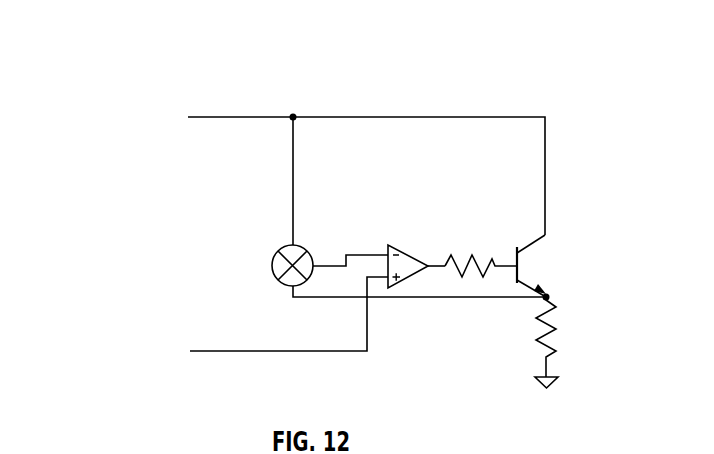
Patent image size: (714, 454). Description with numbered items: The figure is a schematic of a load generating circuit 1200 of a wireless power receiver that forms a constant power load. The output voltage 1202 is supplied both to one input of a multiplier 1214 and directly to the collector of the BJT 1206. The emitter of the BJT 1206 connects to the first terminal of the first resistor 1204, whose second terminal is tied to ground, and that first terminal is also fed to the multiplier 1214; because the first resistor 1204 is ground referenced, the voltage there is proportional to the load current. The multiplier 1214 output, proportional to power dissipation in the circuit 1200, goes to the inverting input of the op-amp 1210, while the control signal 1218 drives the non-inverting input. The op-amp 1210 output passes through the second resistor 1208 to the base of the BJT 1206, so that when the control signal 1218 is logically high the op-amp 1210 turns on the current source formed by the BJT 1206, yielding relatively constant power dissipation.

The load generating circuit 1200 is at (118, 74).
The voltage Vout 1202 is at (156, 103).
The resistor R1 1204 is at (568, 317).
The BJT Q1 1206 is at (555, 252).
The resistor R2 1208 is at (473, 225).
The op-amp U1 1210 is at (407, 223).
The multiplier 1214 is at (297, 243).
The control signal 1218 is at (143, 340).